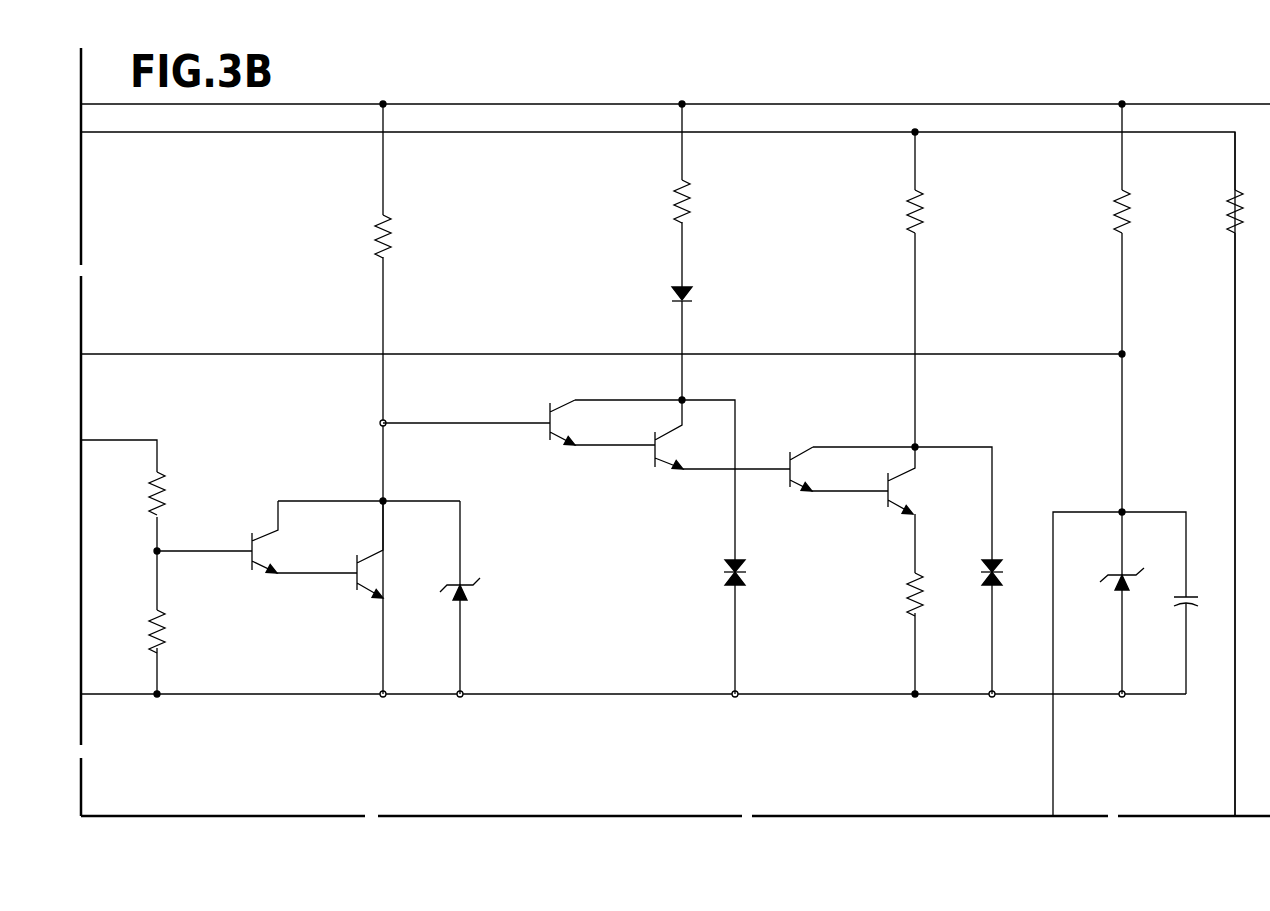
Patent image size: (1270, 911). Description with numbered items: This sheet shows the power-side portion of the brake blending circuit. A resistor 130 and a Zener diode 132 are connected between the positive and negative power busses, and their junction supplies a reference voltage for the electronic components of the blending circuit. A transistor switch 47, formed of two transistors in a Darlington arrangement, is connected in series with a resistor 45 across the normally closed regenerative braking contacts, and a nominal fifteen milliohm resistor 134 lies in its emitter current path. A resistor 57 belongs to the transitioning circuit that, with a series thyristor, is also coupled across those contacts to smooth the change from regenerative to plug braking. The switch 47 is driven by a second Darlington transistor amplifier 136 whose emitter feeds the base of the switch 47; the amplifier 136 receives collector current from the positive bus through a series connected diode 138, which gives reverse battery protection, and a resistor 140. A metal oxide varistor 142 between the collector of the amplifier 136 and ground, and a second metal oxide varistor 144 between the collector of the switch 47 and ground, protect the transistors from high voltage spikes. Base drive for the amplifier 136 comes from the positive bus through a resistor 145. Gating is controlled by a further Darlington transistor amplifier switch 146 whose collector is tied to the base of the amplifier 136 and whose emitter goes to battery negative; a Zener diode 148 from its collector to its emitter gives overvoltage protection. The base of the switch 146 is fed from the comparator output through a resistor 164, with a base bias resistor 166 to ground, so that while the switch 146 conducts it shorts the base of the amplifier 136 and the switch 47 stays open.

The resistor 45 is at (930, 211).
The transistor switch 47 is at (910, 484).
The resistor 57 is at (1219, 219).
The resistor 130 is at (1108, 218).
The Zener diode 132 is at (1109, 592).
The resistor 134 is at (893, 597).
The Darlington transistor amplifier 136 is at (672, 450).
The diode 138 is at (695, 296).
The resistor 140 is at (702, 204).
The metal oxide varistor 142 is at (720, 565).
The metal oxide varistor 144 is at (983, 578).
The resistor 145 is at (393, 243).
The Darlington transistor amplifier switch 146 is at (385, 583).
The Zener diode 148 is at (473, 595).
The resistor 164 is at (172, 497).
The base bias resistor 166 is at (167, 637).